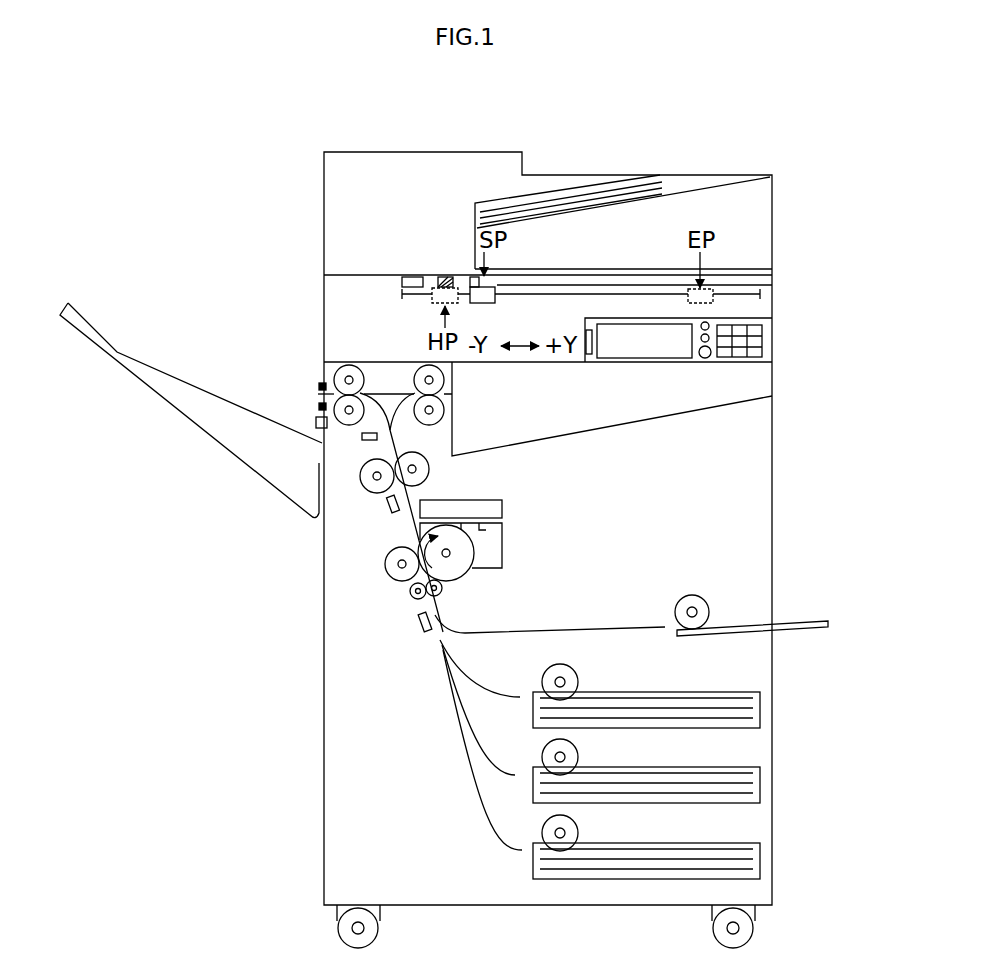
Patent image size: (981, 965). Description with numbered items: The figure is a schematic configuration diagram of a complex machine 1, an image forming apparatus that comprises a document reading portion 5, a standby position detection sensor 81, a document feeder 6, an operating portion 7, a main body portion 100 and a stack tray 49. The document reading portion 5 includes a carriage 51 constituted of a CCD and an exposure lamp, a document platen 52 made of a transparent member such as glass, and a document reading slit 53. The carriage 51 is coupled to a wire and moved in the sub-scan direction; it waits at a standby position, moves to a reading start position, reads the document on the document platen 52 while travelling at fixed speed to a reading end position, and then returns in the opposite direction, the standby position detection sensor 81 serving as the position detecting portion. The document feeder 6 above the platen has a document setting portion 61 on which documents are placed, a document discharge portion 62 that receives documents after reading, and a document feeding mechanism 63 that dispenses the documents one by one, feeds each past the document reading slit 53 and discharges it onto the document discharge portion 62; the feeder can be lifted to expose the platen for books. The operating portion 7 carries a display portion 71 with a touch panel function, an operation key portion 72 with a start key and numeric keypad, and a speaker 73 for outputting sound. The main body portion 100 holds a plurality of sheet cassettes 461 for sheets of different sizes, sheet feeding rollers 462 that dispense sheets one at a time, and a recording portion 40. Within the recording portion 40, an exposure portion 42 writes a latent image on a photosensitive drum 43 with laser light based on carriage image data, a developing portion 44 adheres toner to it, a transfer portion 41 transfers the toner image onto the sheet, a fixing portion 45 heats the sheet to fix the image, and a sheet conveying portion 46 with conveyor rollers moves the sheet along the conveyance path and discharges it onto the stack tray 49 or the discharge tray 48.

The complex machine 1 is at (170, 142).
The document reading portion 5 is at (346, 307).
The document feeder 6 is at (580, 173).
The document setting portion 61 is at (688, 183).
The document discharge portion 62 is at (560, 268).
The document feeding mechanism 63 is at (398, 214).
The document reading slit 53 is at (411, 277).
The standby position detection sensor 81 is at (443, 277).
The document platen 52 is at (760, 283).
The carriage 51 is at (486, 303).
The operating portion 7 is at (780, 342).
The display portion 71 is at (625, 332).
The operation key portion 72 is at (728, 352).
The speaker 73 is at (584, 334).
The discharge tray 48 is at (607, 432).
The stack tray 49 is at (234, 459).
The recording portion 40 is at (378, 535).
The sheet conveying portion 46 is at (415, 371).
The fixing portion 45 is at (378, 493).
The exposure portion 42 is at (502, 504).
The developing portion 44 is at (502, 545).
The photosensitive drum 43 is at (462, 574).
The transfer portion 41 is at (395, 578).
The sheet cassettes 461 is at (757, 716).
The sheet feeding rollers 462 is at (578, 685).
The main body portion 100 is at (745, 604).